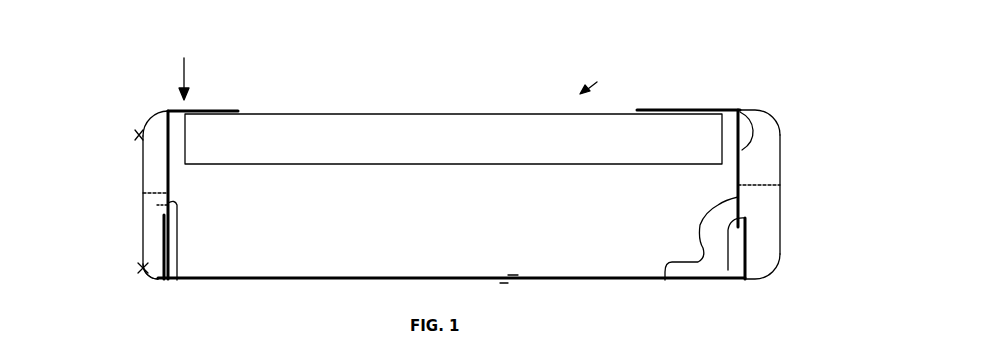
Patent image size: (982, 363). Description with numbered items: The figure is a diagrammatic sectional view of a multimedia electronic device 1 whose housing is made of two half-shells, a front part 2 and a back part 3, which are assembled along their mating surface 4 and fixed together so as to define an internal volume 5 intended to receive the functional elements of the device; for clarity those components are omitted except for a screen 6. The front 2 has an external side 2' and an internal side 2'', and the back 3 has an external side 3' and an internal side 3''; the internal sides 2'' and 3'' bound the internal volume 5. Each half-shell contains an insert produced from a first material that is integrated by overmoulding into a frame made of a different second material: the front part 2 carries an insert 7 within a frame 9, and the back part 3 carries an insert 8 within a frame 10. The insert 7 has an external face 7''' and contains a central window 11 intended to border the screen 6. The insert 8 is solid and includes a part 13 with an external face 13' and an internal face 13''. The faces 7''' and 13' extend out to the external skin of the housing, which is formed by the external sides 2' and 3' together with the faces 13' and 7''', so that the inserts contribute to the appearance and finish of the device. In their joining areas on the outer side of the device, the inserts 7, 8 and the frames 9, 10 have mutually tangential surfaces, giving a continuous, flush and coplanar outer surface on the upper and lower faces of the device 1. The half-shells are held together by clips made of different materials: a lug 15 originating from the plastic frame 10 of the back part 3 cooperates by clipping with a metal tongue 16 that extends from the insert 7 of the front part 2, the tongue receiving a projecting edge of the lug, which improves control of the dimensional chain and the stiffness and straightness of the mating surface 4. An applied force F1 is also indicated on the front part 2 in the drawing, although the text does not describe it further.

The device 1 is at (595, 82).
The front part 2 is at (124, 195).
The external side of the front 2' is at (94, 102).
The internal side of the front 2'' is at (199, 195).
The back part 3 is at (119, 252).
The external side of the back 3' is at (99, 282).
The internal side of the back 3'' is at (197, 247).
The mating surface 4 is at (780, 180).
The internal volume 5 is at (438, 223).
The screen 6 is at (426, 135).
The insert of the front part 7 is at (755, 106).
The external face of the insert 7''' is at (688, 66).
The insert of the back part 8 is at (748, 244).
The frame of the front part 9 is at (778, 118).
The frame of the back part 10 is at (780, 223).
The central window 11 is at (238, 111).
The part of the insert 13 is at (451, 302).
The external face of the part 13' is at (505, 304).
The internal face of the part 13'' is at (512, 247).
The lug 15 is at (177, 280).
The metal tongue 16 is at (728, 280).
The applied force F1 is at (185, 65).